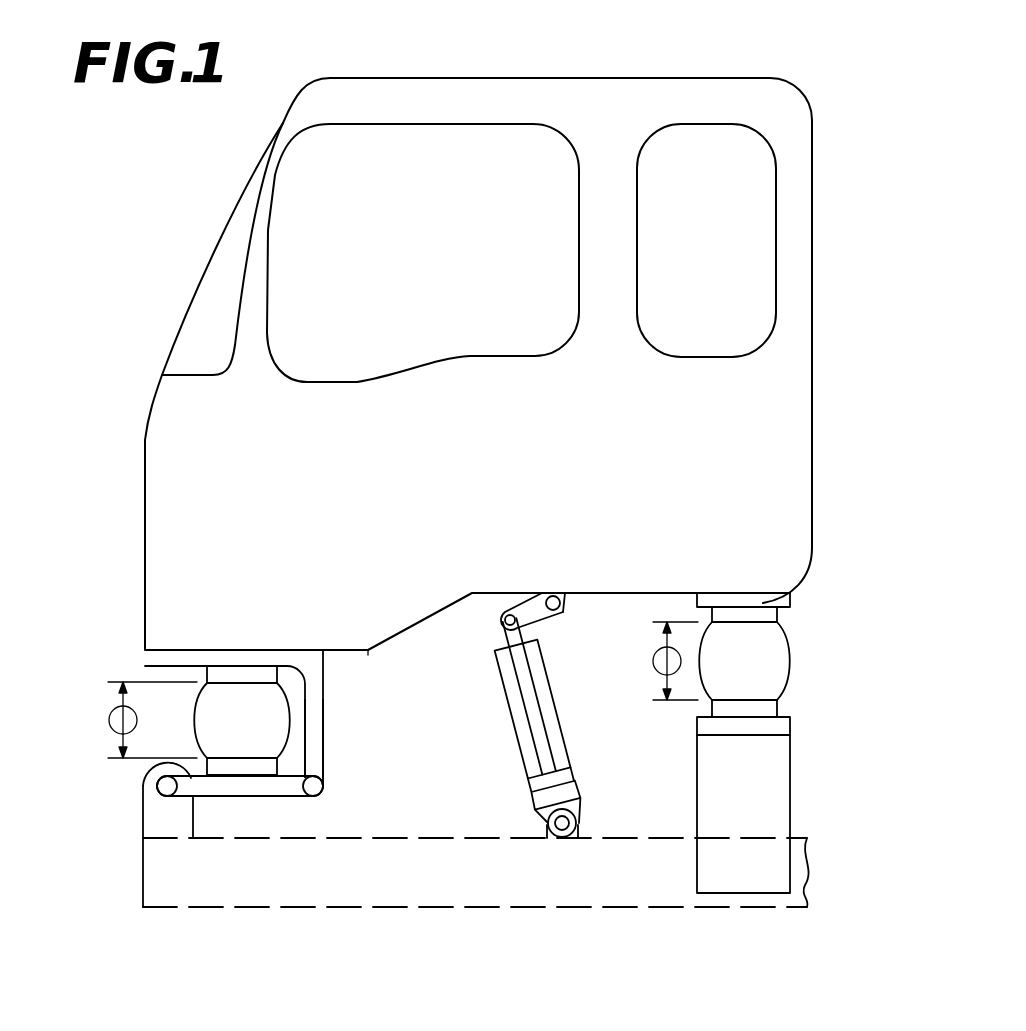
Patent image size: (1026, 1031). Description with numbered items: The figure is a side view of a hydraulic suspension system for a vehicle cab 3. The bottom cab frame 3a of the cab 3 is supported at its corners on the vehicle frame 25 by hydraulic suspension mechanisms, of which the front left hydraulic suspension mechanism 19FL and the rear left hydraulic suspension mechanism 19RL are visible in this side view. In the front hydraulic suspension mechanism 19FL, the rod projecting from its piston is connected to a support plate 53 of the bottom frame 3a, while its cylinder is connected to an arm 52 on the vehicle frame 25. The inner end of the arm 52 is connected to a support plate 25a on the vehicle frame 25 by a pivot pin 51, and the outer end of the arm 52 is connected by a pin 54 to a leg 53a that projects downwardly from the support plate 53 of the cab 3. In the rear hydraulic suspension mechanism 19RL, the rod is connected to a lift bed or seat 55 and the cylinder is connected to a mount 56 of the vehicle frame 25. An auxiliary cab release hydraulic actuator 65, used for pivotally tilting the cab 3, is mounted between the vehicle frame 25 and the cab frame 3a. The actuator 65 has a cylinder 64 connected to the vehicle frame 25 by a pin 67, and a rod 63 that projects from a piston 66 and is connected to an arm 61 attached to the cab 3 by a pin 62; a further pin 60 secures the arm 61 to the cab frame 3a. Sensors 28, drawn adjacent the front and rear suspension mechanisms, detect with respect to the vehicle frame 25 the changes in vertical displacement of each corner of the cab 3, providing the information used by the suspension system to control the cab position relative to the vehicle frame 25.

The cab 3 is at (187, 412).
The bottom cab frame 3a is at (383, 651).
The front left hydraulic suspension mechanism 19FL is at (220, 733).
The rear left hydraulic suspension mechanism 19RL is at (722, 675).
The vehicle frame 25 is at (498, 888).
The support plate 25a is at (165, 820).
The sensors 28 is at (118, 721).
The pivot pin 51 is at (158, 786).
The arm 52 is at (244, 790).
The support plate 53 is at (260, 652).
The leg 53a is at (312, 737).
The pin 54 is at (323, 786).
The lift bed or seat 55 is at (763, 602).
The mount 56 is at (780, 777).
The pin 60 is at (563, 608).
The arm 61 is at (530, 611).
The pin 62 is at (503, 619).
The rod 63 is at (525, 682).
The cylinder 64 is at (553, 695).
The cab release hydraulic actuator 65 is at (528, 728).
The piston 66 is at (563, 770).
The pin 67 is at (573, 825).